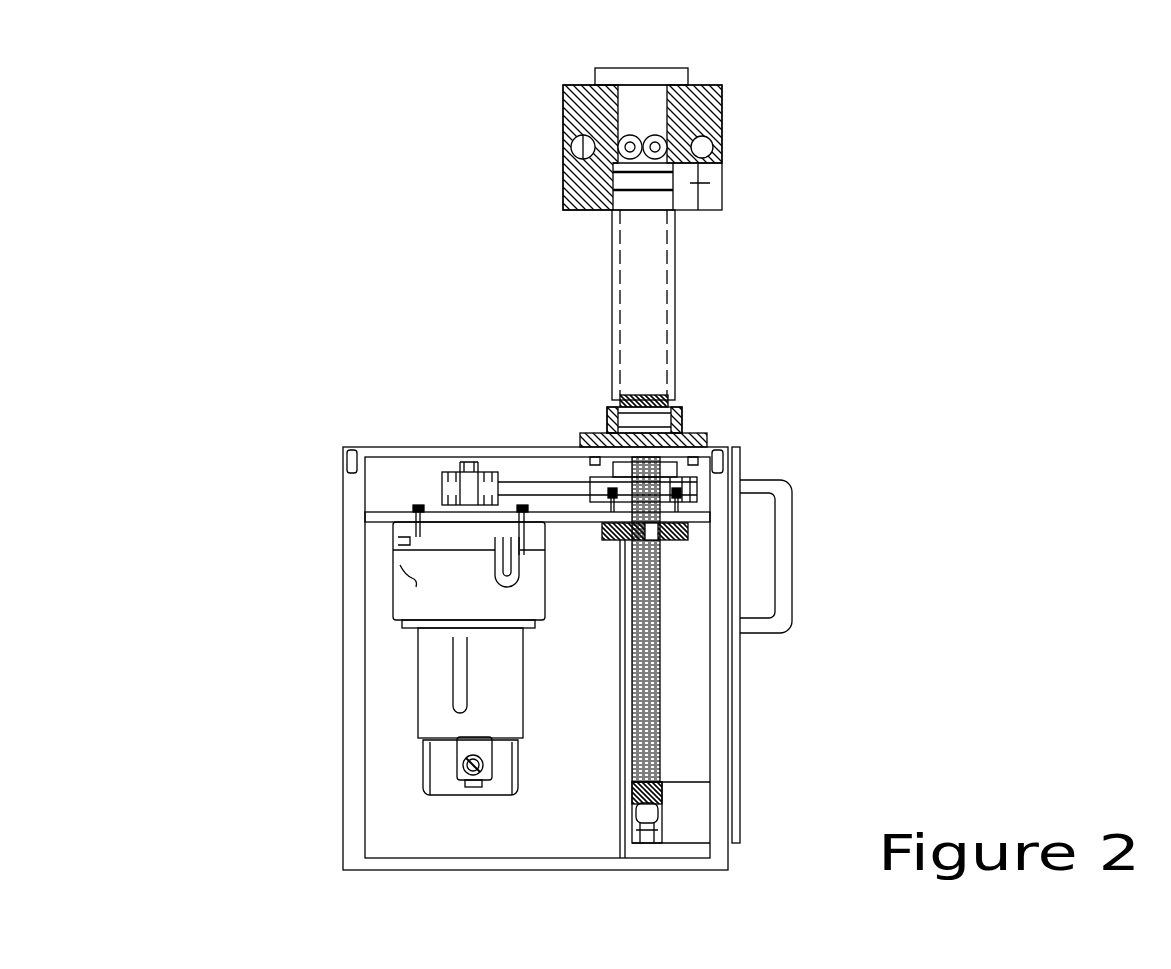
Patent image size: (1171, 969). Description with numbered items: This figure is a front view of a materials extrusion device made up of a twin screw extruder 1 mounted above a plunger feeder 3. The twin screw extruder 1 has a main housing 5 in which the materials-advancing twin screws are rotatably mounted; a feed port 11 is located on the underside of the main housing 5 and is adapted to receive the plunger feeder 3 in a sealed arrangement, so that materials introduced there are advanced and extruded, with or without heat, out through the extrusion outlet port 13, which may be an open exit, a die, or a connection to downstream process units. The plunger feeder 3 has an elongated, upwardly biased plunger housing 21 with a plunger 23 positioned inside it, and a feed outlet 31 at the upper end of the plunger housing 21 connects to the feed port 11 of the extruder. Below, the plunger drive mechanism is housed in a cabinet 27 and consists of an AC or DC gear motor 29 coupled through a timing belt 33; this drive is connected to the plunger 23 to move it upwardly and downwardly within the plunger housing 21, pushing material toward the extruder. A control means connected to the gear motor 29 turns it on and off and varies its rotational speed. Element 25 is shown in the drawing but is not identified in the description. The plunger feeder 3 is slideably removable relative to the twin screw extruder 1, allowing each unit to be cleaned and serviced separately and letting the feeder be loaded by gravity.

The twin screw extruder 1 is at (755, 145).
The plunger feeder 3 is at (770, 448).
The main housing 5 is at (725, 102).
The feed port 11 is at (633, 162).
The extrusion outlet port 13 is at (620, 153).
The plunger housing 21 is at (675, 313).
The plunger 23 is at (642, 392).
The lead screw 25 is at (658, 662).
The cabinet 27 is at (740, 787).
The gear motor 29 is at (447, 725).
The feed outlet 31 is at (653, 160).
The timing belt 33 is at (553, 482).